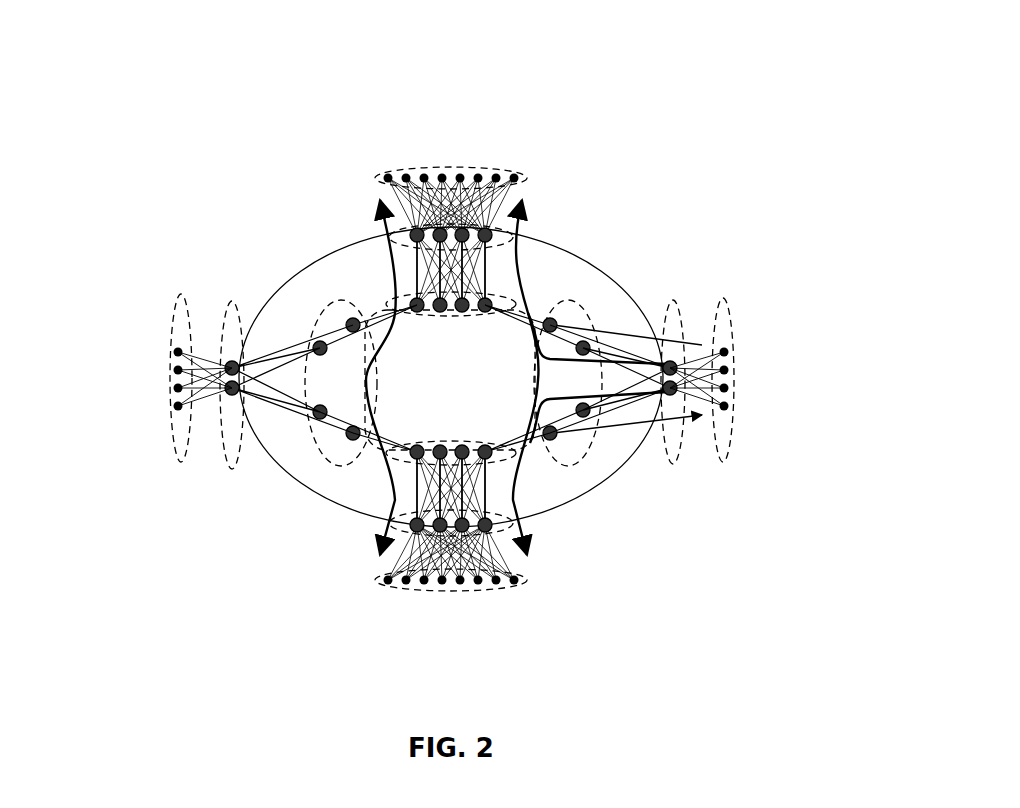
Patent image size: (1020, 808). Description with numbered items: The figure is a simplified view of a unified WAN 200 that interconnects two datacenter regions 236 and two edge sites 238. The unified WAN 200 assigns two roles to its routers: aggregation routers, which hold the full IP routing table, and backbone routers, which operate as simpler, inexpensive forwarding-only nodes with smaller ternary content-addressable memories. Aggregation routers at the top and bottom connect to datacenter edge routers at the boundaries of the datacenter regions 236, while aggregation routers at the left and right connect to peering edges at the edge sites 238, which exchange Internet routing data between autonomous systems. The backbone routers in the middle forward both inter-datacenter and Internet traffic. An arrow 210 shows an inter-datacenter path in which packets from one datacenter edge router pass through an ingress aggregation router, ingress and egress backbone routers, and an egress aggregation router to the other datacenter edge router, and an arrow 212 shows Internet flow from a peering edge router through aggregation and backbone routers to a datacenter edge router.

The unified WAN 200 is at (166, 163).
The arrow 210 is at (393, 256).
The arrow 212 is at (520, 249).
The datacenter region 236 is at (455, 130).
The edge site 238 is at (128, 380).